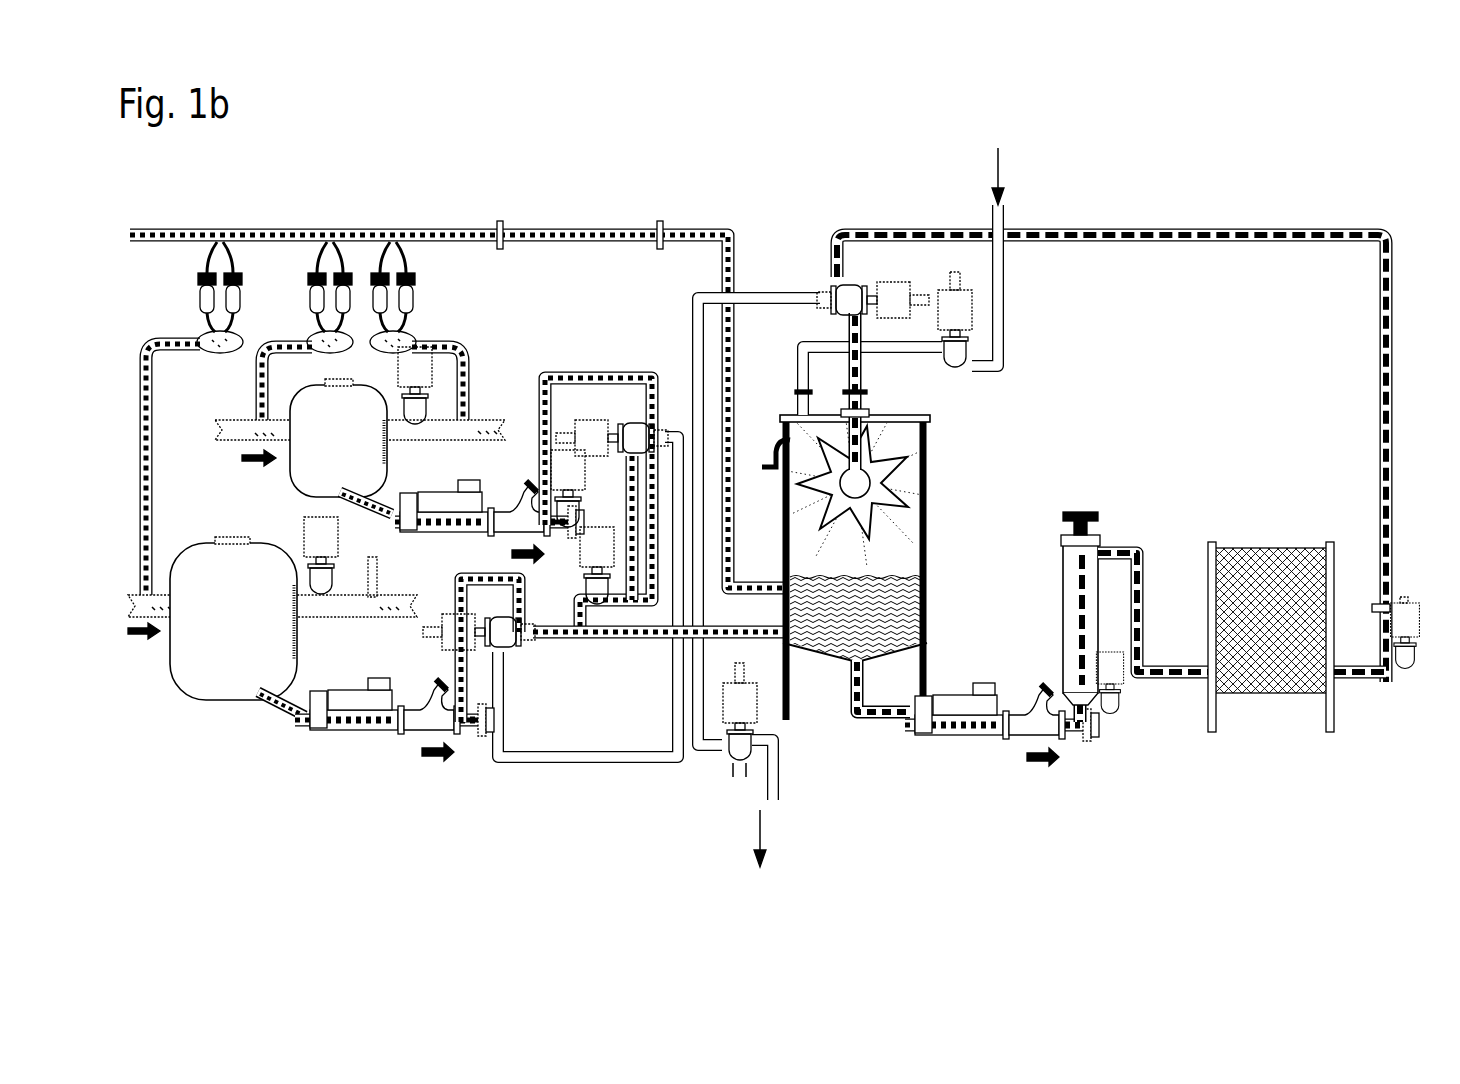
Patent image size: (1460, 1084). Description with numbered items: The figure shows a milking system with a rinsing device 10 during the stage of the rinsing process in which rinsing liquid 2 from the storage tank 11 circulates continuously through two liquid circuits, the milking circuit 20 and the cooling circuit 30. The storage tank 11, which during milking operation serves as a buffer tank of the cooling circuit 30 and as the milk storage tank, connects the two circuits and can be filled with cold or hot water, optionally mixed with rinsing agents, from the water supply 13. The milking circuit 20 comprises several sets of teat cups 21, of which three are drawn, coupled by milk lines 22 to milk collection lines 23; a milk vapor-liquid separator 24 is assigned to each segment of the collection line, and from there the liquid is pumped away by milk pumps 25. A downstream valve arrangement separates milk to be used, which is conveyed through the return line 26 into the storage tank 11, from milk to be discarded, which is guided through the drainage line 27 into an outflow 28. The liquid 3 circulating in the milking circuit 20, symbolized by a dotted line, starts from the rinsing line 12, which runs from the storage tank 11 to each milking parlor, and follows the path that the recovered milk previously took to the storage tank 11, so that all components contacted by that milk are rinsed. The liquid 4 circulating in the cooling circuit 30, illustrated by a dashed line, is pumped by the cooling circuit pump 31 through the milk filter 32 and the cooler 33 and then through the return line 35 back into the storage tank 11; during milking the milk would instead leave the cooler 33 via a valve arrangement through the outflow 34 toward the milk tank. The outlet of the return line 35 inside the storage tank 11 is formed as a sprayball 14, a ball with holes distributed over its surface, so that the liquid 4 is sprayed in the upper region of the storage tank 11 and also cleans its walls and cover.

The rinsing liquid 2 is at (932, 620).
The liquid circulating in the milking circuit 3 is at (550, 242).
The liquid circulating in the cooling circuit 4 is at (1106, 250).
The rinsing device 10 is at (855, 838).
The storage tank 11 is at (879, 516).
The rinsing line 12 is at (590, 228).
The water supply 13 is at (1008, 220).
The sprayball 14 is at (866, 488).
The milking circuit 20 is at (200, 842).
The teat cups 21 is at (222, 302).
The milk lines 22 is at (142, 400).
The milk collection lines 23 is at (236, 436).
The milk vapor-liquid separator 24 is at (298, 482).
The milk pumps 25 is at (408, 498).
The return line 26 is at (614, 636).
The drainage line 27 is at (602, 762).
The outflow 28 is at (768, 792).
The cooling circuit 30 is at (1190, 836).
The cooling circuit pump 31 is at (950, 735).
The milk filter 32 is at (1080, 578).
The cooler 33 is at (1255, 548).
The outflow 34 is at (1405, 690).
The return line 35 is at (1247, 240).